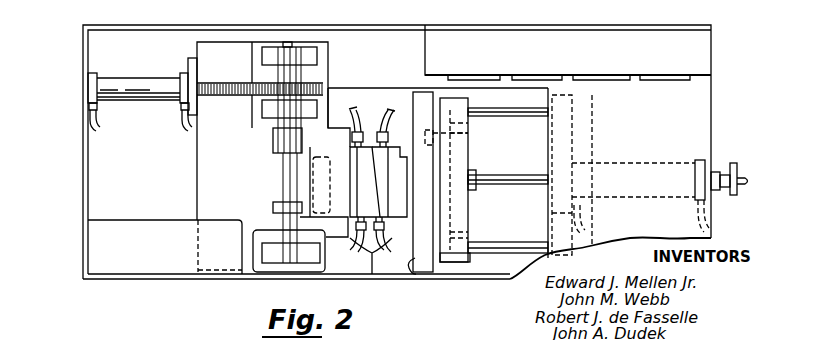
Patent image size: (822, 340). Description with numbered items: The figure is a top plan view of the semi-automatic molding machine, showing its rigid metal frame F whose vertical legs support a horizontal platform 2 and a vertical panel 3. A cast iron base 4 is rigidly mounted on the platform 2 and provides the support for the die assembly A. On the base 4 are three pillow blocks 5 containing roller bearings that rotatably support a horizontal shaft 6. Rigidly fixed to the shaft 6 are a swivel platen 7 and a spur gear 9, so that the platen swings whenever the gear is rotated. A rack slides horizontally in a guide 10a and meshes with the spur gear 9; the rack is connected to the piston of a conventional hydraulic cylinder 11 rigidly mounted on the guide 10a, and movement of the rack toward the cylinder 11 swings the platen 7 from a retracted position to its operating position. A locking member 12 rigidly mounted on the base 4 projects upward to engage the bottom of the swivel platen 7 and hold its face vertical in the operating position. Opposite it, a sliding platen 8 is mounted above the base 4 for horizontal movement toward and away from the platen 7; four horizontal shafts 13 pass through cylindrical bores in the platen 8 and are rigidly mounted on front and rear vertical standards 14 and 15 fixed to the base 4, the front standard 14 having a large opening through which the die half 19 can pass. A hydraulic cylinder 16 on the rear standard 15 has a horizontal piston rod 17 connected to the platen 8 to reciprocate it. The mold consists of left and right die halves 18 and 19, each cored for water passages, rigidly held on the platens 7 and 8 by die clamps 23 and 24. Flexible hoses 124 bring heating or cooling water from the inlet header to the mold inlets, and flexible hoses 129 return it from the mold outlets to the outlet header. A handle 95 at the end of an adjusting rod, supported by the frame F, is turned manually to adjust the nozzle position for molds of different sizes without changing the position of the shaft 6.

The horizontal platform 2 is at (88, 213).
The vertical panel 3 is at (425, 44).
The cast iron base 4 is at (200, 190).
The pillow blocks 5 is at (268, 46).
The horizontal shaft 6 is at (288, 41).
The swivel platen 7 is at (346, 130).
The sliding platen 8 is at (470, 154).
The spur gear 9 is at (268, 84).
The guide 10a is at (213, 72).
The hydraulic cylinder 11 is at (135, 75).
The locking member 12 is at (282, 176).
The horizontal shafts 13 is at (516, 116).
The front vertical standard 14 is at (411, 276).
The rear vertical standard 15 is at (592, 139).
The hydraulic cylinder 16 is at (645, 164).
The horizontal piston rod 17 is at (510, 176).
The left die half 18 is at (366, 178).
The right die half 19 is at (378, 182).
The die clamp 23 is at (356, 244).
The die clamp 24 is at (389, 238).
The handle 95 is at (738, 165).
The flexible hoses 124 is at (372, 279).
The flexible hoses 129 is at (384, 112).
The frame F is at (80, 190).
The die assembly A is at (372, 120).